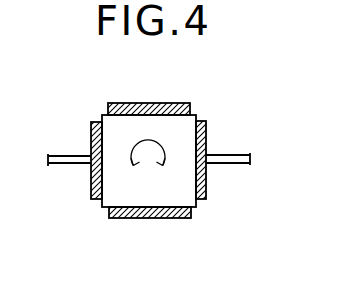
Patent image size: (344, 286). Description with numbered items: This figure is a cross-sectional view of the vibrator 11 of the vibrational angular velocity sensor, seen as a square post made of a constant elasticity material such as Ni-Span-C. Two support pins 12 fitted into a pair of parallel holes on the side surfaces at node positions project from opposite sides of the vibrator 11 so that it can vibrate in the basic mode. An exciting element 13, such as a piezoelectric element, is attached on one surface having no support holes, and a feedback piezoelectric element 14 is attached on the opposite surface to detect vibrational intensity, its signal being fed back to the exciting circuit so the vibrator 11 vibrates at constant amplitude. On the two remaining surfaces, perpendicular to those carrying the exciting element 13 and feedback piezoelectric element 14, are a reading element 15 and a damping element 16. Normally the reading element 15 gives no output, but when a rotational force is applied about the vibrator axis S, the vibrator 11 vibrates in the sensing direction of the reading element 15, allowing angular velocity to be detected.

The vibrator 11 is at (187, 123).
The support pins 12 is at (231, 163).
The exciting element 13 is at (152, 103).
The feedback piezoelectric element 14 is at (172, 218).
The reading element 15 is at (207, 137).
The damping element 16 is at (93, 126).
The vibrator axis S is at (147, 163).